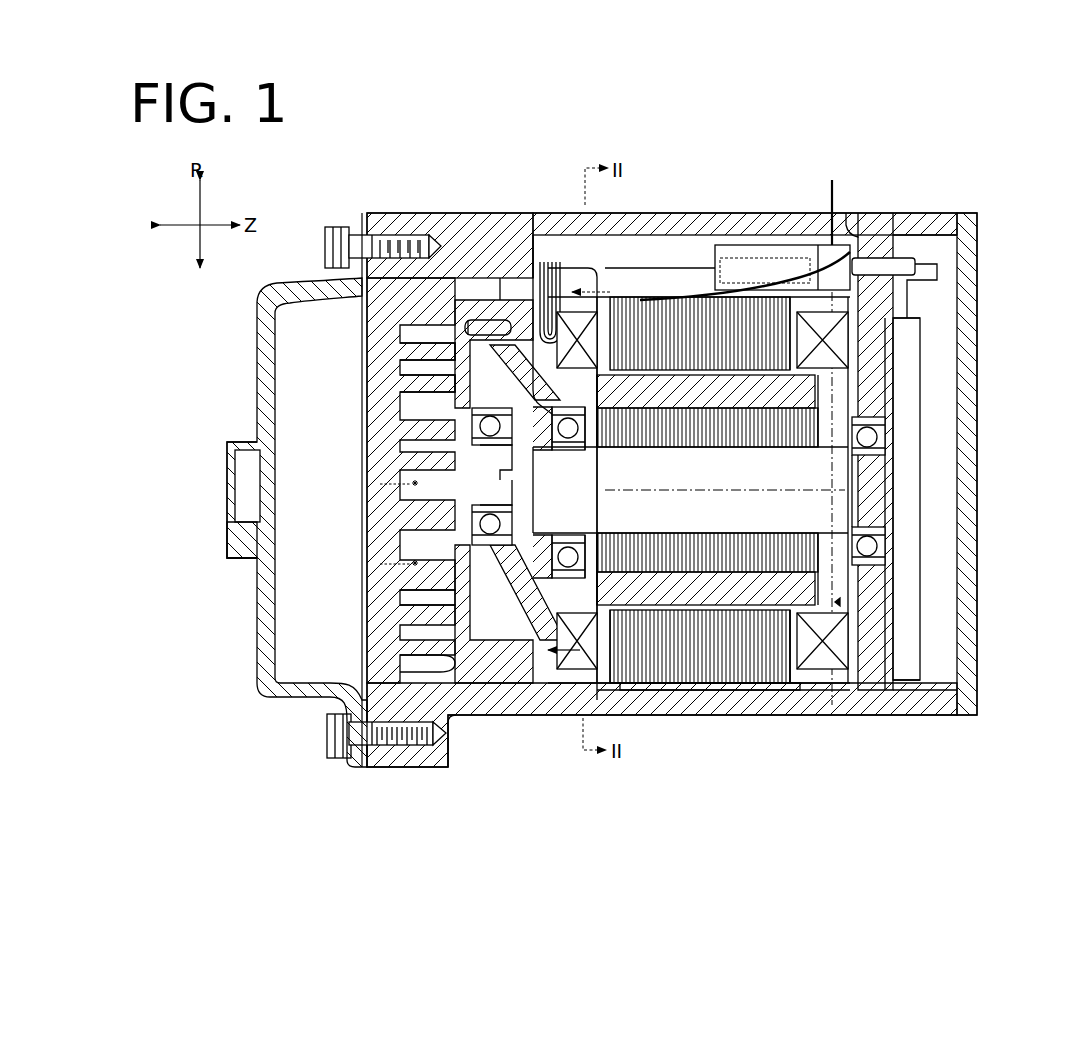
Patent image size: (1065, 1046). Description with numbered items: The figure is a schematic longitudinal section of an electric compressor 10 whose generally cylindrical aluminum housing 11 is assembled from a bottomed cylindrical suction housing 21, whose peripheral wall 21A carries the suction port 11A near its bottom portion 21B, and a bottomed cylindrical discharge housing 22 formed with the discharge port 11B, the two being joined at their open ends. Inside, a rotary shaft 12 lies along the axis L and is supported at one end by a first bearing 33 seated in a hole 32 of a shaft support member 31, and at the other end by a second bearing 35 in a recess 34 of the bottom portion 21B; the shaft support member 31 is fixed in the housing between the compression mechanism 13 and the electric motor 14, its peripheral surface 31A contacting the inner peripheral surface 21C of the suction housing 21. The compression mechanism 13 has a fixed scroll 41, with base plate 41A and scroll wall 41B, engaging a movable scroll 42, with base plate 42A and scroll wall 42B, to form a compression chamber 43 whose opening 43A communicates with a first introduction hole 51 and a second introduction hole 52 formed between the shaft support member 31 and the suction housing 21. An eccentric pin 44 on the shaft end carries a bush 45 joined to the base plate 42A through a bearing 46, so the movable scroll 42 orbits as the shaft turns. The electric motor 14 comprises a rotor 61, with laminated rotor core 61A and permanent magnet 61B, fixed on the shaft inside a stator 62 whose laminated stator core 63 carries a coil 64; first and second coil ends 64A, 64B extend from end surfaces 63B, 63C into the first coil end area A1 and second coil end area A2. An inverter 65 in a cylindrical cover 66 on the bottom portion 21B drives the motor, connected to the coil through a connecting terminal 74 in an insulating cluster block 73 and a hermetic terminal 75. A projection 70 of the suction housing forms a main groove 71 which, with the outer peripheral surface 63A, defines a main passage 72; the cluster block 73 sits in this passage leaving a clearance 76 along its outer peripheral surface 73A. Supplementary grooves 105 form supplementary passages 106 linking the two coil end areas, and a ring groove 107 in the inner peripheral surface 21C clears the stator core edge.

The electric compressor 10 is at (958, 190).
The housing 11 is at (430, 174).
The suction port 11A is at (851, 222).
The discharge port 11B is at (236, 512).
The rotary shaft 12 is at (776, 692).
The compression mechanism 13 is at (475, 722).
The electric motor 14 is at (725, 300).
The suction housing 21 is at (422, 232).
The peripheral wall 21A is at (663, 214).
The bottom portion 21B is at (896, 384).
The inner peripheral surface 21C is at (862, 692).
The discharge housing 22 is at (349, 230).
The shaft support member 31 is at (512, 700).
The peripheral surface 31A is at (510, 298).
The hole 32 is at (574, 452).
The first bearing 33 is at (546, 450).
The recess 34 is at (886, 560).
The second bearing 35 is at (887, 440).
The fixed scroll 41 is at (317, 352).
The base plate 41A is at (420, 386).
The scroll wall 41B is at (420, 350).
The movable scroll 42 is at (317, 598).
The base plate 42A is at (426, 640).
The scroll wall 42B is at (416, 597).
The compression chamber 43 is at (392, 518).
The opening 43A is at (471, 300).
The eccentric pin 44 is at (514, 498).
The bush 45 is at (587, 526).
The bearing 46 is at (462, 431).
The first introduction hole 51 is at (547, 690).
The second introduction hole 52 is at (540, 292).
The rotor 61 is at (790, 487).
The rotor core 61A is at (768, 410).
The permanent magnet 61B is at (718, 410).
The stator 62 is at (706, 760).
The stator core 63 is at (672, 690).
The outer peripheral surface 63A is at (736, 690).
The first end surface 63B is at (600, 690).
The second end surface 63C is at (826, 690).
The coil 64 is at (632, 685).
The first coil end 64A is at (572, 672).
The second coil end 64B is at (826, 672).
The inverter 65 is at (927, 572).
The cover 66 is at (962, 642).
The projection 70 is at (694, 262).
The main groove 71 is at (802, 242).
The main passage 72 is at (611, 250).
The cluster block 73 is at (866, 308).
The outer peripheral surface 73A is at (956, 469).
The connecting terminal 74 is at (770, 245).
The hermetic terminal 75 is at (906, 258).
The clearance 76 is at (746, 245).
The supplementary groove 105 is at (702, 690).
The supplementary passage 106 is at (748, 690).
The ring groove 107 is at (790, 690).
The first coil end area A1 is at (577, 290).
The second coil end area A2 is at (846, 604).
The axis L is at (660, 494).